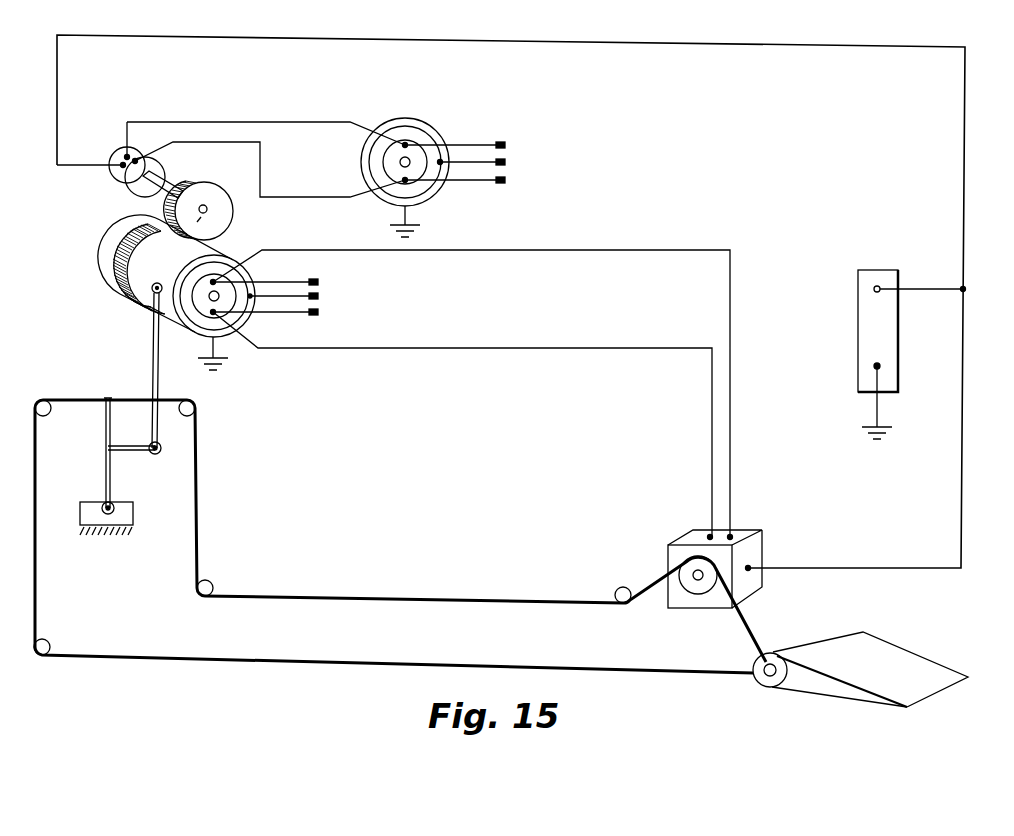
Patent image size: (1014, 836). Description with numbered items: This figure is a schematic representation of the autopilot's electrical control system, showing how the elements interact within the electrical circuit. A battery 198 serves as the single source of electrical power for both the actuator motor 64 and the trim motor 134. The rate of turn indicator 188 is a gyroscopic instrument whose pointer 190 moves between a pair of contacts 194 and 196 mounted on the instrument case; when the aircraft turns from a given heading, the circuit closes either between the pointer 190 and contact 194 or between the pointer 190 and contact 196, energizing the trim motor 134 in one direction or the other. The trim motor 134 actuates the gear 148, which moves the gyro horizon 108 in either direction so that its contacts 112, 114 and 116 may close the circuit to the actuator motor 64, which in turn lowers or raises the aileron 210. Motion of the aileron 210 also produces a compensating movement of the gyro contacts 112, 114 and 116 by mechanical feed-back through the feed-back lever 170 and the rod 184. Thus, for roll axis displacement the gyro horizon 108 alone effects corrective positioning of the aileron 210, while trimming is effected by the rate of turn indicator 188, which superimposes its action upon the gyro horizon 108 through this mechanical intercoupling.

The actuator motor 64 is at (763, 556).
The gyro horizon 108 is at (100, 241).
The electrical contact 112 is at (320, 296).
The electrical contact 114 is at (320, 284).
The electrical contact 116 is at (320, 312).
The trim motor 134 is at (110, 182).
The gear 148 is at (233, 217).
The feed-back lever 170 is at (118, 487).
The rod 184 is at (152, 376).
The rate of turn indicator 188 is at (440, 133).
The pointer 190 is at (508, 158).
The electrical contact 194 is at (482, 148).
The electrical contact 196 is at (486, 185).
The battery 198 is at (858, 331).
The aileron 210 is at (813, 692).